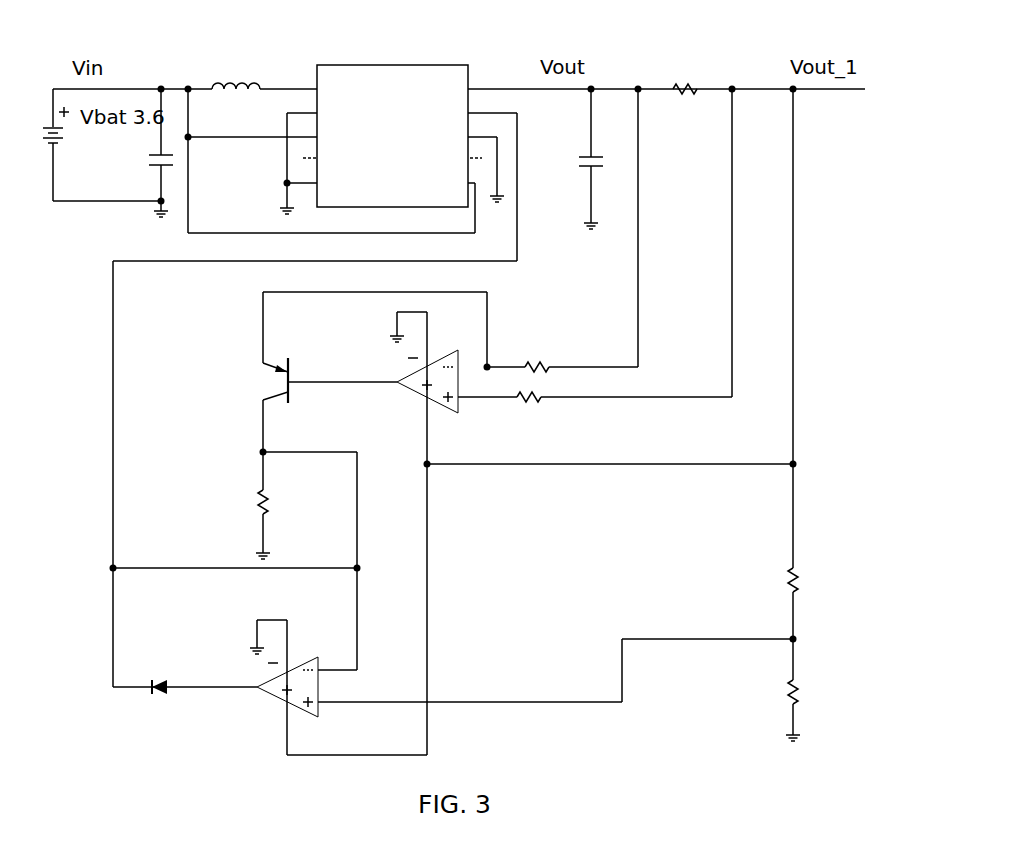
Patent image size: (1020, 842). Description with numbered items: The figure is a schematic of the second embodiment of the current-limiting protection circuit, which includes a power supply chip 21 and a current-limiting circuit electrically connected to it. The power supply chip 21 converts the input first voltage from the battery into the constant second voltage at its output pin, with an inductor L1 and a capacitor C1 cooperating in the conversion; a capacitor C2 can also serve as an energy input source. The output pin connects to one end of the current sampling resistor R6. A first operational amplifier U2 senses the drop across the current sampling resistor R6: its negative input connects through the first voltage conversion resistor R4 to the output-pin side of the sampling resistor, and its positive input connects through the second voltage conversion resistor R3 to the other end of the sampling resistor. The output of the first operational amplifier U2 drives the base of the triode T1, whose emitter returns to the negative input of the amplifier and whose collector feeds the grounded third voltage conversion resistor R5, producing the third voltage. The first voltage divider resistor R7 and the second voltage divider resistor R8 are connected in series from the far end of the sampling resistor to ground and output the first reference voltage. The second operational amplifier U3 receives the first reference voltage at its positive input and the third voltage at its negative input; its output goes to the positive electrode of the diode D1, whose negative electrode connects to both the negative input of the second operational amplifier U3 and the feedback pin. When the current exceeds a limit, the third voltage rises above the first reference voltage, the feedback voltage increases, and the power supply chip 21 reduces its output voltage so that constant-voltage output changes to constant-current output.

The power supply chip 21 is at (358, 65).
The inductor L1 is at (235, 70).
The capacitor C1 is at (578, 158).
The capacitor C2 is at (145, 152).
The second voltage conversion resistor R3 is at (539, 415).
The first voltage conversion resistor R4 is at (539, 353).
The third voltage conversion resistor R5 is at (247, 503).
The current sampling resistor R6 is at (697, 74).
The first voltage divider resistor R7 is at (776, 573).
The second voltage divider resistor R8 is at (776, 706).
The triode T1 is at (207, 376).
The first operational amplifier U2 is at (429, 382).
The second operational amplifier U3 is at (288, 688).
The diode D1 is at (170, 659).